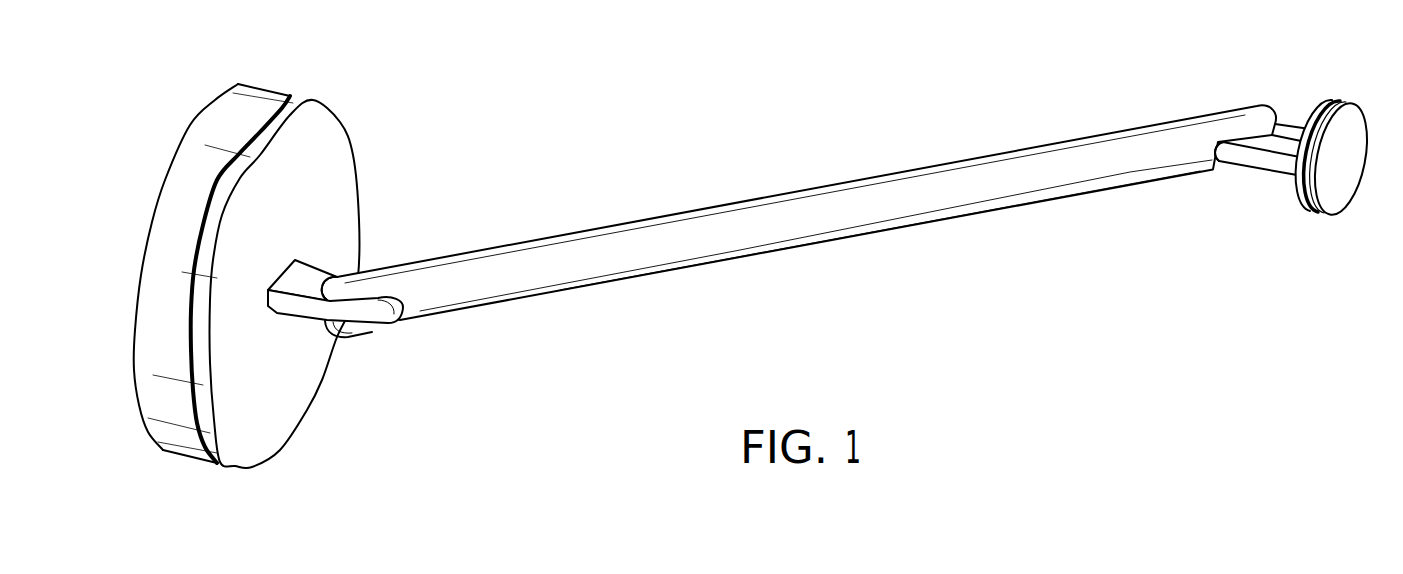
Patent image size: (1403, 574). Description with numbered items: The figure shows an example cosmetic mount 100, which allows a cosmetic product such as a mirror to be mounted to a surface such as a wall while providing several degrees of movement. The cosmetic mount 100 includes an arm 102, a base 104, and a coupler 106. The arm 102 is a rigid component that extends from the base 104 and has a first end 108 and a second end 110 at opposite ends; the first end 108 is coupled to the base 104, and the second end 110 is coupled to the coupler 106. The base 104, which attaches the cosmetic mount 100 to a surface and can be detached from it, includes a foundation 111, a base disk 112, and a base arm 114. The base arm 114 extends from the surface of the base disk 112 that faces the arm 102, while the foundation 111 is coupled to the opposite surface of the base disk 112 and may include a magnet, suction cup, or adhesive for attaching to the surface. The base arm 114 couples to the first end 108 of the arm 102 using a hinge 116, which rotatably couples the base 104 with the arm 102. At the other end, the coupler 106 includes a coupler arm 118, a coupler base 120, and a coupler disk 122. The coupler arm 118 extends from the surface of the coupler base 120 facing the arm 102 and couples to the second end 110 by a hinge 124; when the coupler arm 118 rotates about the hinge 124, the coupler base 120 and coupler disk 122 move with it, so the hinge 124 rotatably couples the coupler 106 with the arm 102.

The cosmetic mount 100 is at (708, 61).
The arm 102 is at (797, 190).
The base 104 is at (185, 203).
The coupler 106 is at (1322, 99).
The first end 108 is at (370, 272).
The second end 110 is at (1238, 110).
The foundation 111 is at (170, 345).
The base disk 112 is at (300, 395).
The base arm 114 is at (313, 273).
The hinge 116 is at (363, 317).
The coupler arm 118 is at (1267, 158).
The coupler base 120 is at (1302, 200).
The coupler disk 122 is at (1348, 178).
The hinge 124 is at (1222, 160).